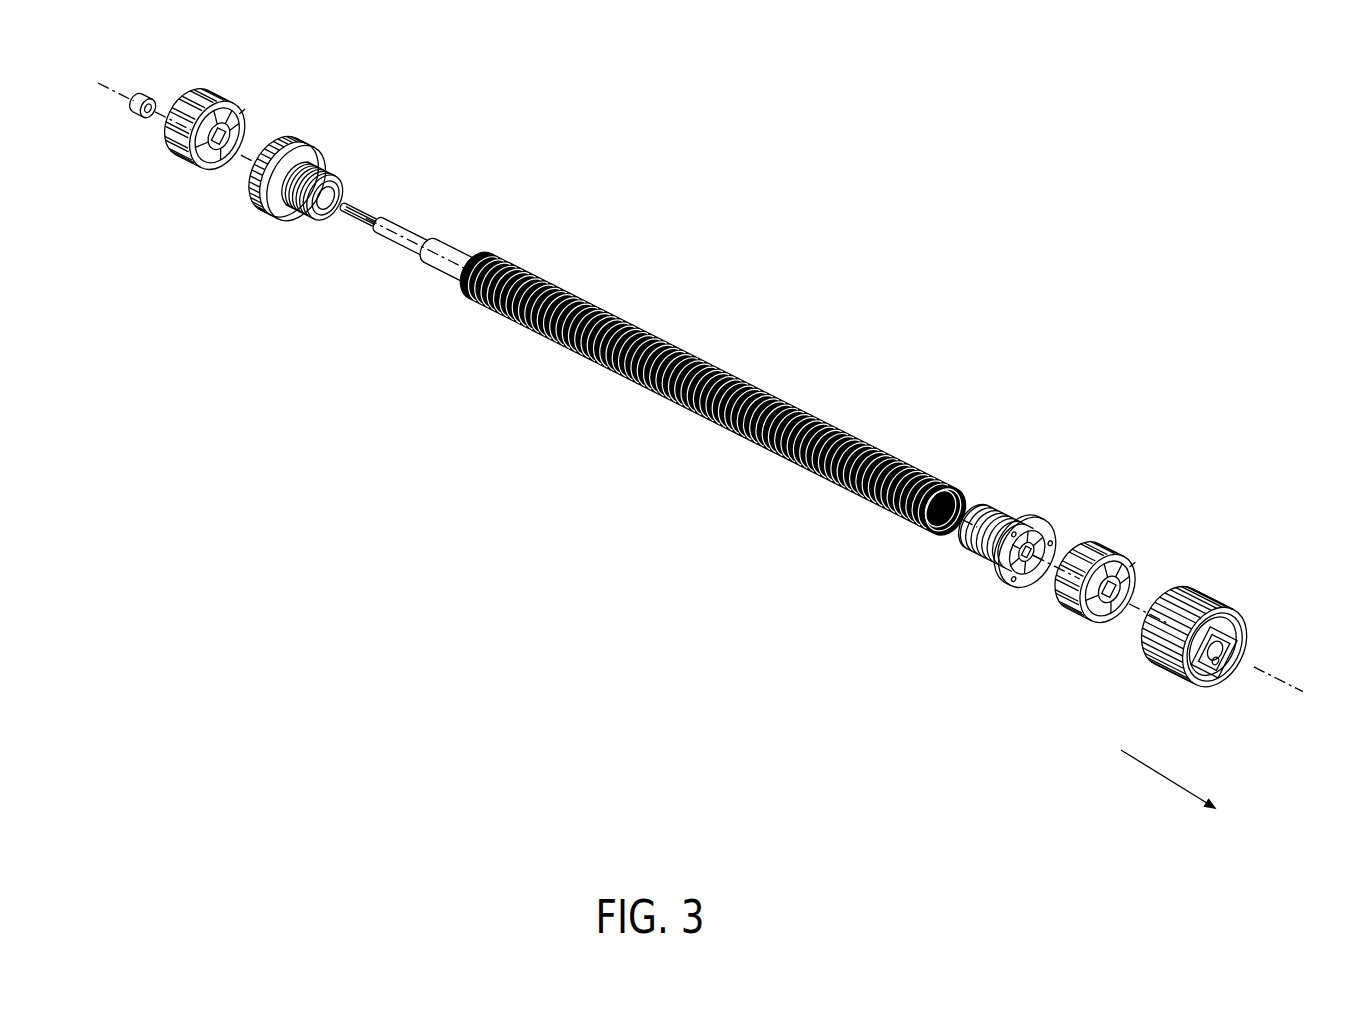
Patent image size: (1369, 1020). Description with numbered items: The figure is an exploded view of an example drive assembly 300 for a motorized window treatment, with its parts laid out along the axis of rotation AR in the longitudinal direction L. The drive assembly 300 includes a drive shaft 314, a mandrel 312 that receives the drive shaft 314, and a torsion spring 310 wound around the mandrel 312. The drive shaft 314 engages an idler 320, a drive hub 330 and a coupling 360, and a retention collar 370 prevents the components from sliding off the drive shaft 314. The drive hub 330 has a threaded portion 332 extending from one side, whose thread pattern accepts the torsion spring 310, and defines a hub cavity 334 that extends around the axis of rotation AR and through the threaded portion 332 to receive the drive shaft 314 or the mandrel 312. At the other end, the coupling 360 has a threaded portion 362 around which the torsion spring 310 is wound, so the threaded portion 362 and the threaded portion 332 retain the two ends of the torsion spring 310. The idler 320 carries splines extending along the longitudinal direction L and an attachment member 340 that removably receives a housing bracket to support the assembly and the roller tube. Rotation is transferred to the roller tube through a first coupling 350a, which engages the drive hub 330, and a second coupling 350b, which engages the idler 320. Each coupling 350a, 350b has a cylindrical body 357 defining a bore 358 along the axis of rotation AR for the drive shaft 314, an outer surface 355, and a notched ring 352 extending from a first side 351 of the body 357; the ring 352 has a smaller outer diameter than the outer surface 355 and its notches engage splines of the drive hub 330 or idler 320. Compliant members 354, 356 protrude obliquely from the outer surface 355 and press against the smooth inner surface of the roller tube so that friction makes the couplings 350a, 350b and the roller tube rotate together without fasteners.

The drive assembly 300 is at (1097, 195).
The torsion spring 310 is at (657, 335).
The mandrel 312 is at (482, 252).
The drive shaft 314 is at (360, 207).
The idler 320 is at (1245, 614).
The drive hub 330 is at (316, 174).
The threaded portion 332 is at (303, 220).
The hub cavity 334 is at (322, 203).
The attachment member 340 is at (1237, 653).
The first coupling 350a is at (173, 100).
The second coupling 350b is at (1067, 557).
The first side 351 is at (227, 107).
The ring 352 is at (200, 163).
The compliant member 354 is at (177, 98).
The outer surface 355 is at (180, 167).
The compliant member 356 is at (207, 92).
The body 357 is at (240, 111).
The bore 358 is at (223, 173).
The coupling 360 is at (1009, 480).
The threaded portion 362 is at (988, 513).
The retention collar 370 is at (140, 118).
The longitudinal direction L is at (1168, 776).
The axis of rotation AR is at (1285, 680).